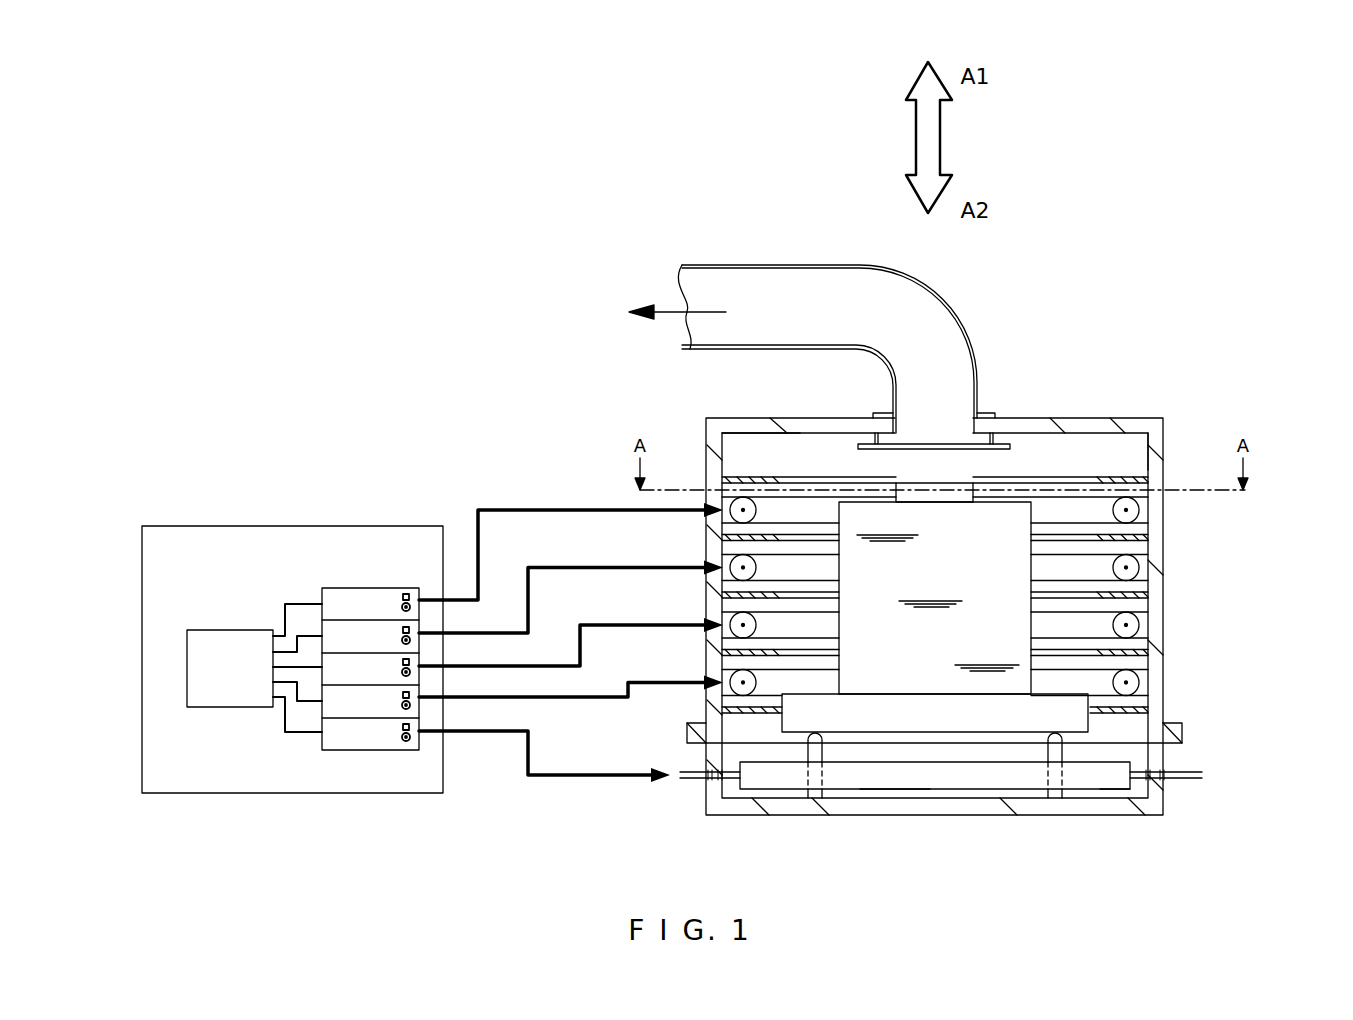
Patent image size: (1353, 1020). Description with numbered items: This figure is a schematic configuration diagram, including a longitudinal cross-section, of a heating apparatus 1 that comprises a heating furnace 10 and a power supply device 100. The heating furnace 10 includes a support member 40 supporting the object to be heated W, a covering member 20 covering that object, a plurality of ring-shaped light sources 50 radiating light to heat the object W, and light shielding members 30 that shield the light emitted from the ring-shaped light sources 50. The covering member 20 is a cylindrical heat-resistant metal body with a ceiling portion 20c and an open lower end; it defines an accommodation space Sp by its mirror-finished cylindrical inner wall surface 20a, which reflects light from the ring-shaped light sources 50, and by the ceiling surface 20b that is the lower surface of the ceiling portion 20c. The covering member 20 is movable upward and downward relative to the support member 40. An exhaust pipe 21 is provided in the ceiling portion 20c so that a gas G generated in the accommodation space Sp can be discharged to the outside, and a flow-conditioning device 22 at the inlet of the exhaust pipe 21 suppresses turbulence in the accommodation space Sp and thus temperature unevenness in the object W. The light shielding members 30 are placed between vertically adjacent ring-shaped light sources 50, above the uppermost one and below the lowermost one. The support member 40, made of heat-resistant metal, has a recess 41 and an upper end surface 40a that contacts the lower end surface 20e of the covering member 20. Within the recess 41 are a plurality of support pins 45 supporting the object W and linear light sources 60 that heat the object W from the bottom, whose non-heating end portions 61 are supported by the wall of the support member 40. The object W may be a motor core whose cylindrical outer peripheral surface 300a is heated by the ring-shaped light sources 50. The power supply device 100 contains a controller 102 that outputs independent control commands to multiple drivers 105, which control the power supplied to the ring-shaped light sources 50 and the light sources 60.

The heating apparatus 1 is at (328, 245).
The heating furnace 10 is at (1232, 362).
The covering member 20 is at (1088, 412).
The cylindrical inner wall surface 20a is at (1148, 457).
The ceiling surface 20b is at (773, 440).
The ceiling portion 20c is at (972, 488).
The lower end surface 20e is at (1173, 745).
The exhaust pipe 21 is at (930, 288).
The flow-conditioning device 22 is at (893, 443).
The light shielding member 30 is at (748, 484).
The support member 40 is at (1026, 804).
The upper end surface 40a is at (1157, 742).
The recess 41 is at (1142, 790).
The support pin 45 is at (813, 752).
The ring-shaped light source 50 is at (1140, 510).
The light source 60 is at (890, 800).
The end portion 61 is at (700, 777).
The power supply device 100 is at (266, 520).
The controller 102 is at (205, 708).
The driver 105 is at (415, 660).
The cylindrical outer peripheral surface 300a is at (948, 680).
The object to be heated W is at (992, 494).
The accommodation space Sp is at (1090, 458).
The gas G is at (688, 312).